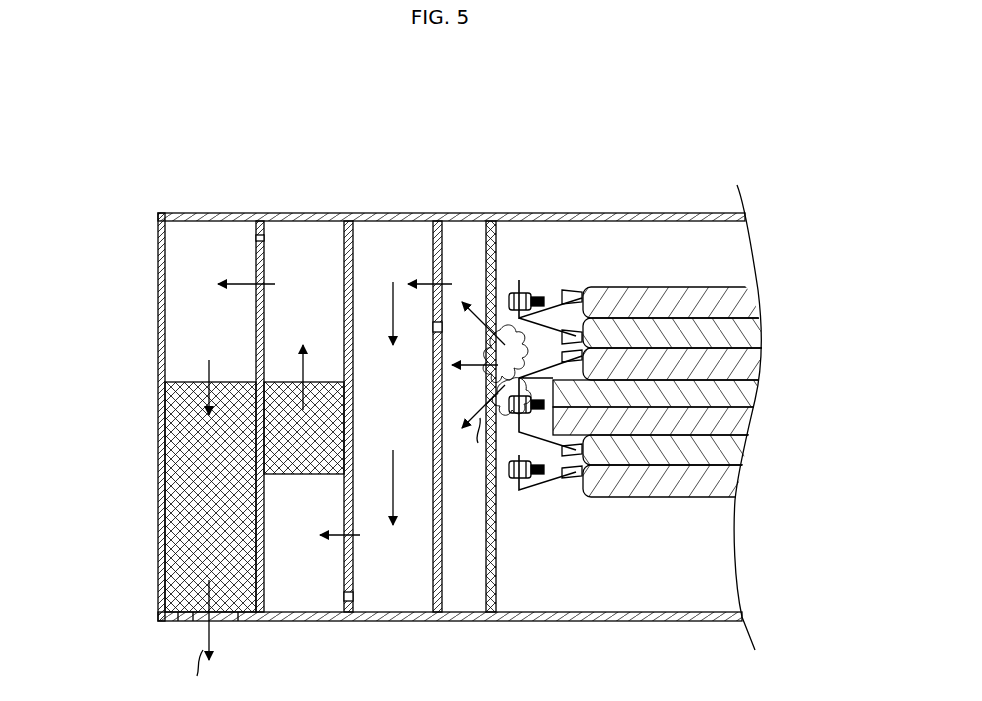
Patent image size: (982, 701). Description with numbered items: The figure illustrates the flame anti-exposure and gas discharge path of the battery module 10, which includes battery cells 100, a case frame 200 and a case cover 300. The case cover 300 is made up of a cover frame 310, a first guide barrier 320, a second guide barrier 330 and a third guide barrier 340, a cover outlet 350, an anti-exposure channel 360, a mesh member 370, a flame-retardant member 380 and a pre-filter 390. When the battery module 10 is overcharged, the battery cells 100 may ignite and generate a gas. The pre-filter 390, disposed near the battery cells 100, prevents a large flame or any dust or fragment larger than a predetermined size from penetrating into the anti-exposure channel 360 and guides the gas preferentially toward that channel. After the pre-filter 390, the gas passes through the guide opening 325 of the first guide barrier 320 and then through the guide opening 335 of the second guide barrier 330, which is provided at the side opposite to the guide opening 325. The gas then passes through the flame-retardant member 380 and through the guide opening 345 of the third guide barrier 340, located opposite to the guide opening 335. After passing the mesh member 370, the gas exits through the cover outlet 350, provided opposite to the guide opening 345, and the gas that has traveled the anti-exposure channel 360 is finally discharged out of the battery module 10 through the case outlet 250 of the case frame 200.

The battery module 10 is at (252, 133).
The battery cell 100 is at (745, 362).
The case frame 200 is at (632, 213).
The case outlet 250 is at (215, 621).
The case cover 300 is at (134, 323).
The cover frame 310 is at (157, 370).
The first guide barrier 320 is at (438, 270).
The guide opening 325 is at (440, 268).
The second guide barrier 330 is at (348, 595).
The guide opening 335 is at (349, 580).
The third guide barrier 340 is at (258, 231).
The guide opening 345 is at (259, 268).
The cover outlet 350 is at (193, 621).
The anti-exposure channel 360 is at (392, 292).
The mesh member 370 is at (233, 380).
The flame-retardant member 380 is at (304, 475).
The pre-filter 390 is at (497, 252).